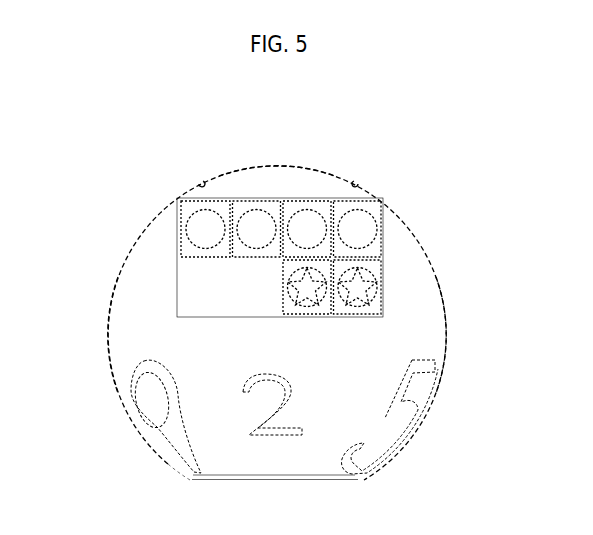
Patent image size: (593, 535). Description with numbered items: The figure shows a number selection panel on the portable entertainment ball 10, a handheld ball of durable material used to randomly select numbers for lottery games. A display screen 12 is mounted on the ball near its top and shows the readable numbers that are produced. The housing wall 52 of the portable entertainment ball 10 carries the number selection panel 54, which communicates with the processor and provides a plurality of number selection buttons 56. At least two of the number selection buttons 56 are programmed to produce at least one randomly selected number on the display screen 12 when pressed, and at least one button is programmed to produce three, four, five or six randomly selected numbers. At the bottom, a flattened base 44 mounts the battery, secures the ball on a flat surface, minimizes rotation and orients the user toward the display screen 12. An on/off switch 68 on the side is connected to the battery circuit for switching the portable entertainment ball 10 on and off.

The portable entertainment ball 10 is at (403, 205).
The display screen 12 is at (278, 167).
The flattened base 44 is at (272, 480).
The housing wall 52 is at (110, 294).
The number selection panel 54 is at (178, 218).
The number selection buttons 56 is at (203, 260).
The on/off switch 68 is at (448, 309).